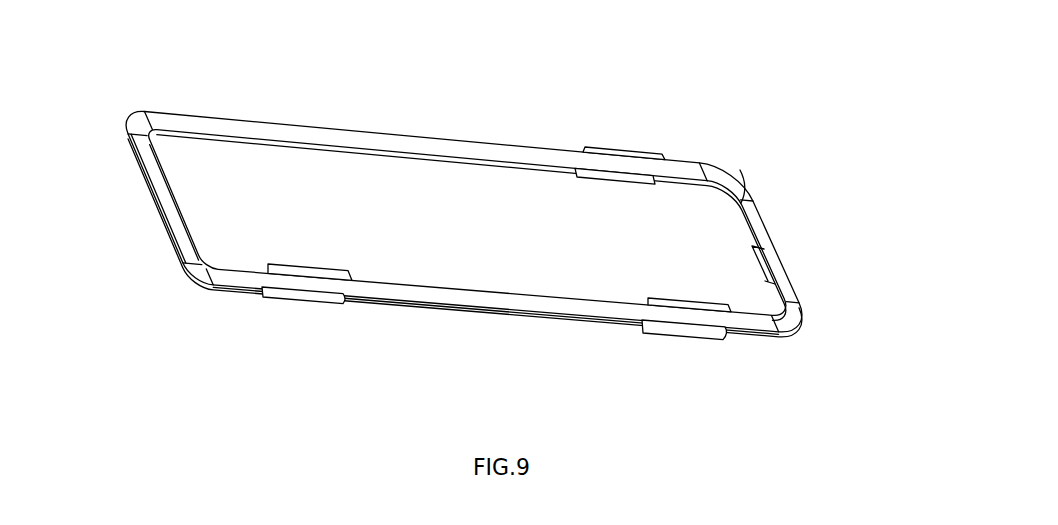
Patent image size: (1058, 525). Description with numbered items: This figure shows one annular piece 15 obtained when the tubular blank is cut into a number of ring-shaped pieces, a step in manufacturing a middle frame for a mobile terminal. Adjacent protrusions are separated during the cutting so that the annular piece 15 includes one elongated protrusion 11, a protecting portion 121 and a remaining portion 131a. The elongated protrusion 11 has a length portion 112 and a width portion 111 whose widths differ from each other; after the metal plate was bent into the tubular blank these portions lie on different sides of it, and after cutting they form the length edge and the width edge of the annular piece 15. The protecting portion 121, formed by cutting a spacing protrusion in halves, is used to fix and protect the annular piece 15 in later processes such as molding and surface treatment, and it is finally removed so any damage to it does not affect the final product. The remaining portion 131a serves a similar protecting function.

The annular piece 15 is at (117, 25).
The elongated protrusion 11 is at (433, 277).
The width portion 111 is at (407, 300).
The length portion 112 is at (160, 219).
The protecting portion 121 is at (603, 147).
The remaining portion 131a is at (753, 251).